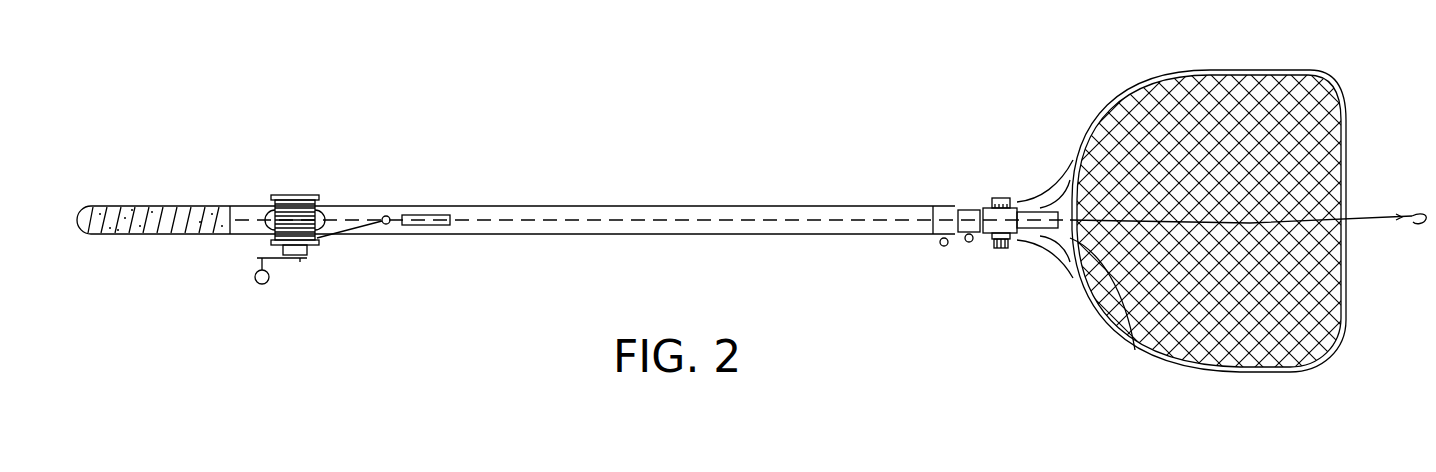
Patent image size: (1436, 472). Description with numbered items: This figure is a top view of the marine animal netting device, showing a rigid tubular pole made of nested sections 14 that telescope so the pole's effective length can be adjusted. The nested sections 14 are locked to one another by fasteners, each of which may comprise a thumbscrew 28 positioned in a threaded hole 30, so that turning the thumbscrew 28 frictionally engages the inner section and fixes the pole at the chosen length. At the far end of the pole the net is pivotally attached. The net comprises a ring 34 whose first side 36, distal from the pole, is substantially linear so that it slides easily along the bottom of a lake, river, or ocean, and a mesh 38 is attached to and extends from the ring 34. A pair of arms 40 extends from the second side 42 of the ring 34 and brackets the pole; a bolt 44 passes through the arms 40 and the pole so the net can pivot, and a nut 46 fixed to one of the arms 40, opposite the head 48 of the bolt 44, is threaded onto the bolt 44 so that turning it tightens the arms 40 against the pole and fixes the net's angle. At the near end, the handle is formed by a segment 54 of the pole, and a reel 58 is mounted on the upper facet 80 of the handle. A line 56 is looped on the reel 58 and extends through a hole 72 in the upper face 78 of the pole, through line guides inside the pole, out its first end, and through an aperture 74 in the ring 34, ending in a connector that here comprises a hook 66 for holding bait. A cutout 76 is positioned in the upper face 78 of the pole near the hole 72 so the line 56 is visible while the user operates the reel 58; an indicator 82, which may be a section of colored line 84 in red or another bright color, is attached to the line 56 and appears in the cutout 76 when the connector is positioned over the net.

The nested sections 14 is at (970, 207).
The thumbscrew 28 is at (943, 246).
The threaded hole 30 is at (937, 232).
The ring 34 is at (1207, 70).
The first side 36 is at (1345, 265).
The mesh 38 is at (1283, 120).
The arms 40 is at (1068, 262).
The second side 42 is at (1137, 350).
The bolt 44 is at (988, 236).
The nut 46 is at (1003, 196).
The head 48 is at (1003, 250).
The segment 54 is at (145, 217).
The line 56 is at (1373, 215).
The reel 58 is at (293, 203).
The hook 66 is at (1418, 228).
The hole 72 is at (386, 214).
The aperture 74 is at (1105, 180).
The cutout 76 is at (428, 214).
The upper face 78 is at (802, 231).
The upper facet 80 is at (183, 221).
The indicator 82 is at (643, 222).
The section of colored line 84 is at (634, 220).